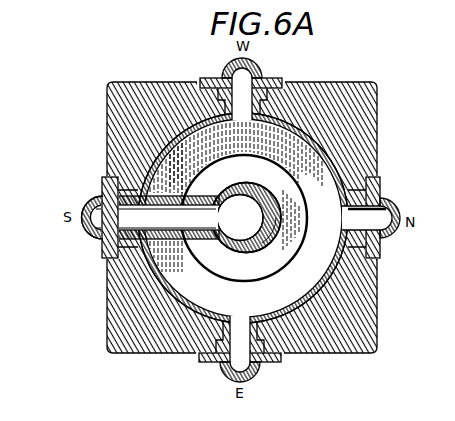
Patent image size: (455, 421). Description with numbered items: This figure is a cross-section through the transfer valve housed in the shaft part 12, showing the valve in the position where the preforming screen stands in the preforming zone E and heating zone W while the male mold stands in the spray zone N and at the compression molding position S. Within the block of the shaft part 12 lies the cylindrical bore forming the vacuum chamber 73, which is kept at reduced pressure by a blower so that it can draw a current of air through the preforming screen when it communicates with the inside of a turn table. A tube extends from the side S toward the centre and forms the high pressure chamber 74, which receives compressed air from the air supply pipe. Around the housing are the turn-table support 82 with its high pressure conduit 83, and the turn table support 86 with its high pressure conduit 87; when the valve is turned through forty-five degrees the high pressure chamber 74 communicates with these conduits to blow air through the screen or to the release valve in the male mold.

The shaft part 12 is at (365, 108).
The vacuum chamber 73 is at (312, 169).
The high pressure chamber 74 is at (170, 221).
The turn-table support 82 is at (260, 68).
The high pressure conduit 83 is at (246, 83).
The turn table support 86 is at (95, 202).
The high pressure conduit 87 is at (92, 232).